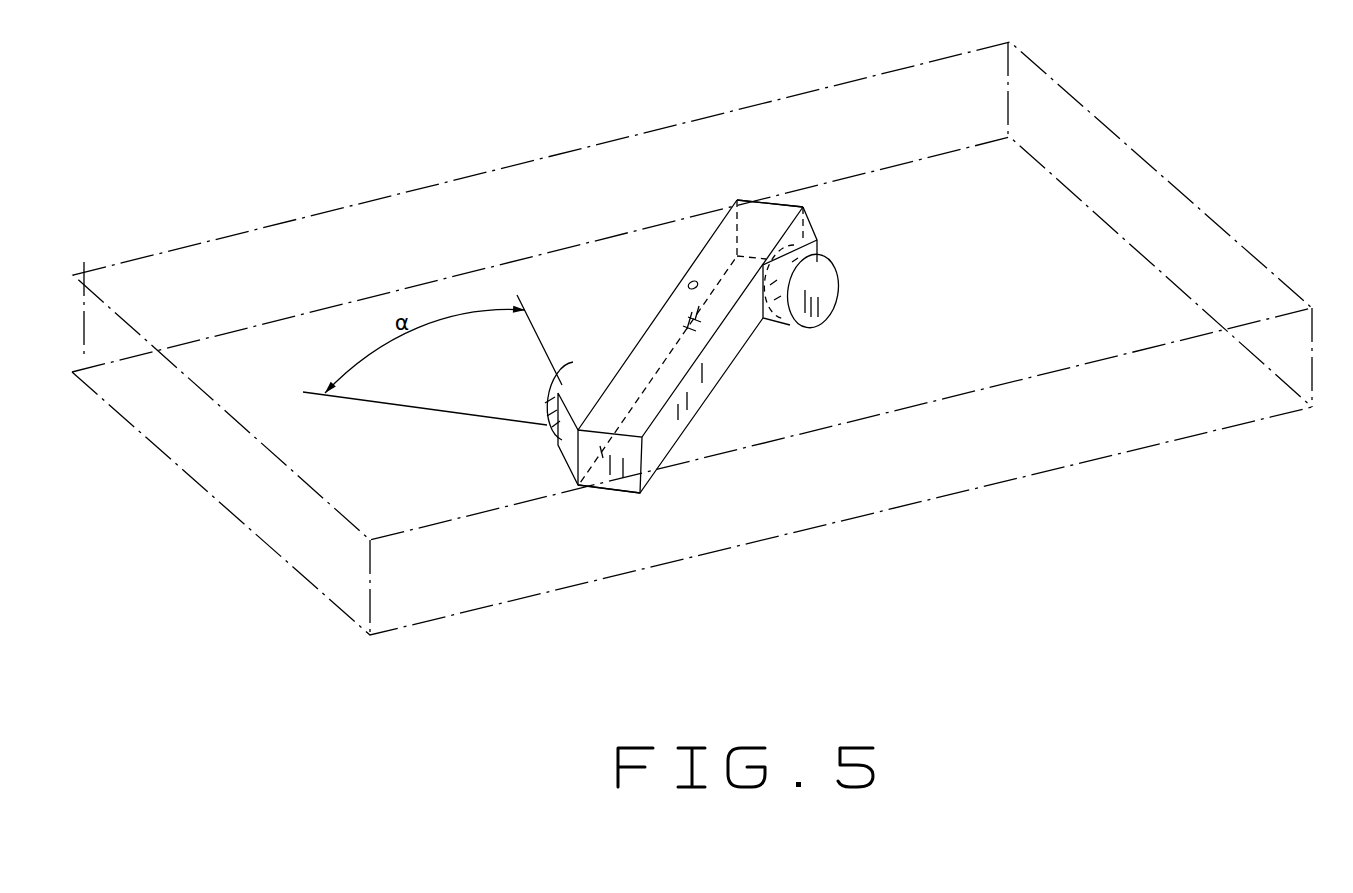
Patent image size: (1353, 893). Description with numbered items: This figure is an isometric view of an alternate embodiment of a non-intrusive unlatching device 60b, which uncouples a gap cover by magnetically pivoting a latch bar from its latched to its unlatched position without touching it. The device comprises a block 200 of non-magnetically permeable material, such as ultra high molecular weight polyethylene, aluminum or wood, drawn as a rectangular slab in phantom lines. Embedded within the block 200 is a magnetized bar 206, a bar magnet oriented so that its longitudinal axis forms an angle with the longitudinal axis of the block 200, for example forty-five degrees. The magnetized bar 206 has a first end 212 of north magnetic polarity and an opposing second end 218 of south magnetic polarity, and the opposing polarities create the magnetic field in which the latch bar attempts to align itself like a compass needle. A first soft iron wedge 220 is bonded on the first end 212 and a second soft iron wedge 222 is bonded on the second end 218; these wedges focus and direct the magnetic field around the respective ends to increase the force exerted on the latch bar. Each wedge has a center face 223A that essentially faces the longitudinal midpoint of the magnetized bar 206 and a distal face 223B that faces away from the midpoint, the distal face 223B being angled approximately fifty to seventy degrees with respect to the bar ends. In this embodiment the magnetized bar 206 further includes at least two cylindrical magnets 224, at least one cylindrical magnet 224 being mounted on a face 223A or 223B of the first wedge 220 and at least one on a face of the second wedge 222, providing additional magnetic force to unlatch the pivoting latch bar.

The unlatching device 60b is at (553, 110).
The block 200 is at (1157, 172).
The magnetized bar 206 is at (728, 370).
The first end 212 is at (609, 458).
The second end 218 is at (777, 200).
The first soft iron wedge 220 is at (556, 434).
The second soft iron wedge 222 is at (815, 227).
The center face 223A is at (584, 385).
The distal face 223B is at (825, 257).
The cylindrical magnet 224 is at (566, 378).